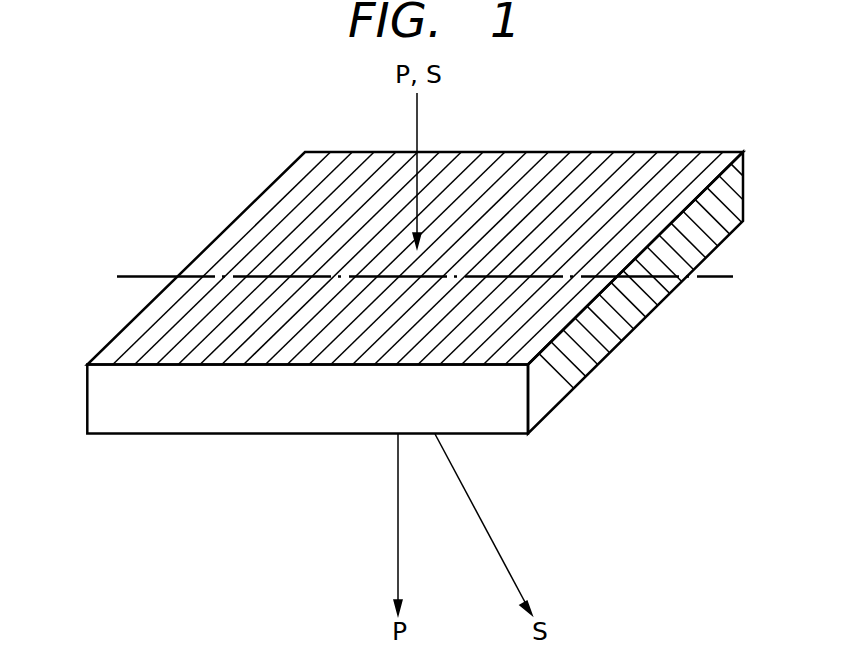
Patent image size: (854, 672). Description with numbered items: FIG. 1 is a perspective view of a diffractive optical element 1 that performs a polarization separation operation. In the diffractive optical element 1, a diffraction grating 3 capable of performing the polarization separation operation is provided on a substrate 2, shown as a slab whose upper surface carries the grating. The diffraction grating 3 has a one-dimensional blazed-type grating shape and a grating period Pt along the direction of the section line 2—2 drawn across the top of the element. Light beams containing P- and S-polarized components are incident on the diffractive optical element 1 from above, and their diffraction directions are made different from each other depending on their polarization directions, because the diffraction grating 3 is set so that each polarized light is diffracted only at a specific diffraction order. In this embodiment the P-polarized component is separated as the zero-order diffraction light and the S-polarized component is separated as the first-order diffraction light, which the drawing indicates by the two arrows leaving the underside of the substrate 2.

The diffractive optical element 1 is at (661, 141).
The substrate 2 is at (662, 387).
The diffraction grating 3 is at (572, 162).